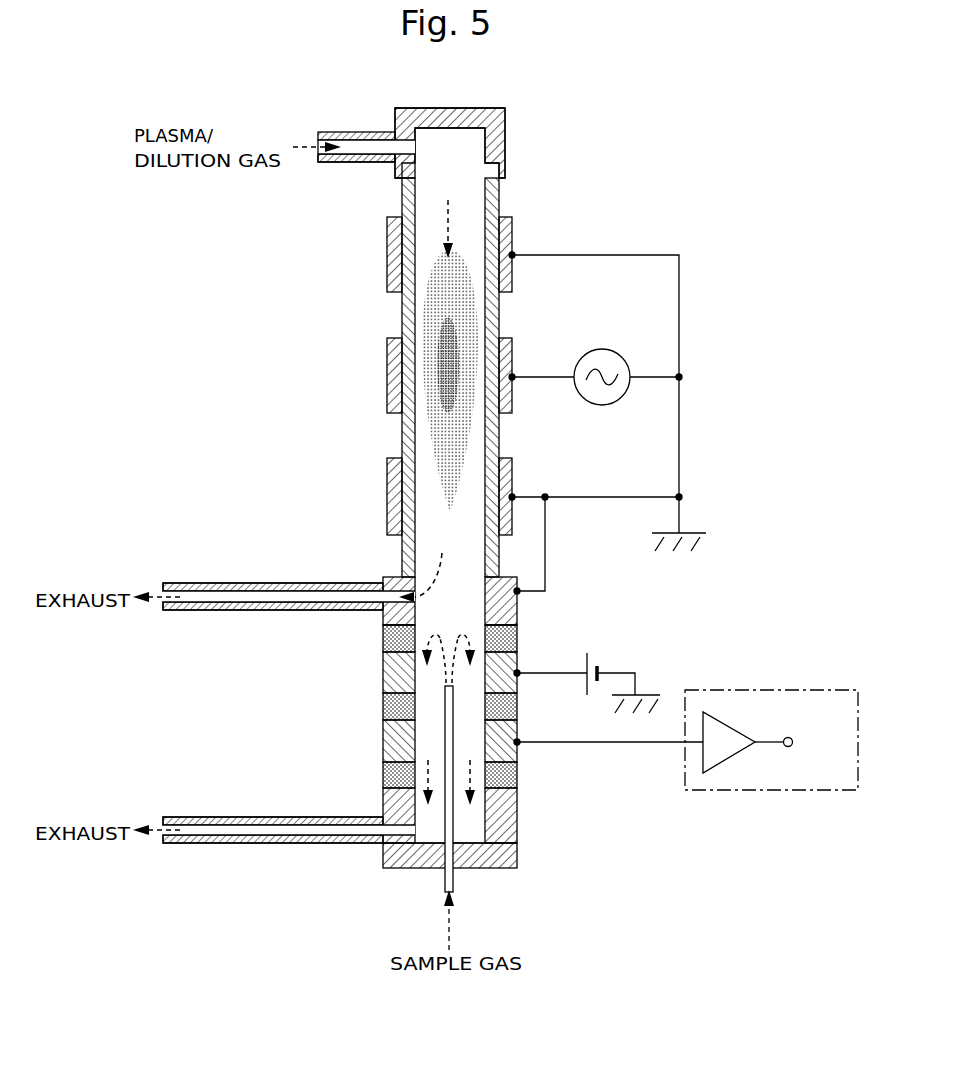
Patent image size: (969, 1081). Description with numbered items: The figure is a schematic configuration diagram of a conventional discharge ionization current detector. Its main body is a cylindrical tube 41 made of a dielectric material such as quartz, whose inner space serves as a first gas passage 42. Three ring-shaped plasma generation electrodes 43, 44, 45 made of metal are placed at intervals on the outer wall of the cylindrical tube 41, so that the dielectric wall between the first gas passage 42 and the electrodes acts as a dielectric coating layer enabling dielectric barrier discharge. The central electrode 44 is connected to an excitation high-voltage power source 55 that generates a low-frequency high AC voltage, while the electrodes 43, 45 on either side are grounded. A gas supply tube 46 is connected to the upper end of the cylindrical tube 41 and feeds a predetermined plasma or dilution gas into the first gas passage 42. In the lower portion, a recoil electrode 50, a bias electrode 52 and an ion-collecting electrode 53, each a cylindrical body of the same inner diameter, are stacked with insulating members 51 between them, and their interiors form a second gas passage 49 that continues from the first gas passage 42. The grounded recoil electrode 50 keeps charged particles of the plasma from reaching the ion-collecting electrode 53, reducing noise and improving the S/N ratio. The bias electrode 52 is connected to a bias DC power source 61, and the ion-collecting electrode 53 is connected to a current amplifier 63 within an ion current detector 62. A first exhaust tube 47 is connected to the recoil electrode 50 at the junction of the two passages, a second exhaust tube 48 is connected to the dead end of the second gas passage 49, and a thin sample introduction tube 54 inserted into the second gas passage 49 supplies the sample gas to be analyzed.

The cylindrical tube 41 is at (502, 204).
The first gas passage 42 is at (425, 443).
The plasma generation electrode 43 is at (387, 373).
The central plasma generation electrode 44 is at (387, 500).
The plasma generation electrode 45 is at (387, 253).
The gas supply tube 46 is at (357, 132).
The first exhaust tube 47 is at (273, 583).
The second exhaust tube 48 is at (273, 817).
The second gas passage 49 is at (479, 622).
The recoil electrode 50 is at (518, 622).
The insulating member 51 is at (383, 638).
The bias electrode 52 is at (520, 690).
The ion-collecting electrode 53 is at (520, 760).
The sample introduction tube 54 is at (445, 826).
The excitation high-voltage power source 55 is at (620, 352).
The bias DC power source 61 is at (617, 650).
The ion current detector 62 is at (686, 763).
The current amplifier 63 is at (717, 768).